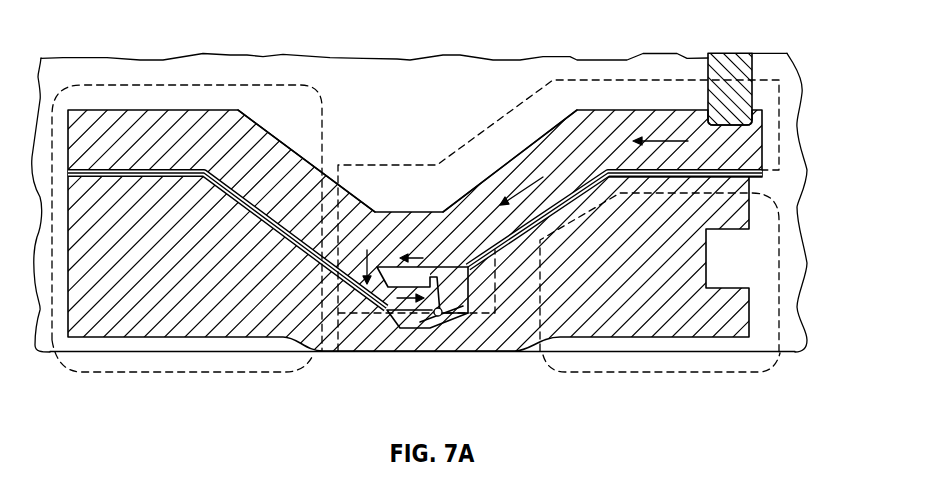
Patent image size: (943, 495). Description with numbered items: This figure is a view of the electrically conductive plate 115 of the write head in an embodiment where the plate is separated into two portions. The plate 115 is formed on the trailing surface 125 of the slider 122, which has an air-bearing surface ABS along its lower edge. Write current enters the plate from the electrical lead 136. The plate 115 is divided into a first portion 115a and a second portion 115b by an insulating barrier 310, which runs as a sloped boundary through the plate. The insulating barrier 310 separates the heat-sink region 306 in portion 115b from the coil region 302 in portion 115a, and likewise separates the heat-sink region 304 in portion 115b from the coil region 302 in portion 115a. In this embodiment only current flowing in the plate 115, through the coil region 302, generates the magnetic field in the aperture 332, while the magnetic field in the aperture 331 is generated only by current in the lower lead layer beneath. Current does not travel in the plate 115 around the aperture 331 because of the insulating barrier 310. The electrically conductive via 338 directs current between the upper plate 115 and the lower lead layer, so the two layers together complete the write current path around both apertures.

The plate 115 is at (136, 115).
The first portion of plate 115a is at (322, 163).
The second portion of plate 115b is at (193, 330).
The slider 122 is at (578, 59).
The trailing surface 125 is at (373, 77).
The electrical lead 136 is at (733, 65).
The coil region 302 is at (355, 313).
The heat-sink region 304 is at (122, 372).
The heat-sink region 306 is at (580, 372).
The insulating barrier 310 is at (183, 197).
The aperture 331 is at (407, 323).
The aperture 332 is at (432, 277).
The electrically conductive via 338 is at (440, 318).
The air-bearing surface ABS is at (735, 353).